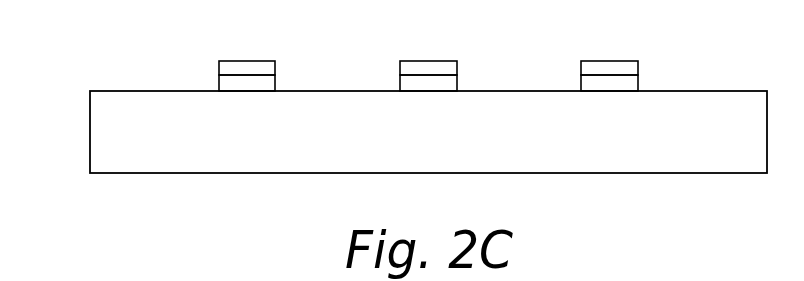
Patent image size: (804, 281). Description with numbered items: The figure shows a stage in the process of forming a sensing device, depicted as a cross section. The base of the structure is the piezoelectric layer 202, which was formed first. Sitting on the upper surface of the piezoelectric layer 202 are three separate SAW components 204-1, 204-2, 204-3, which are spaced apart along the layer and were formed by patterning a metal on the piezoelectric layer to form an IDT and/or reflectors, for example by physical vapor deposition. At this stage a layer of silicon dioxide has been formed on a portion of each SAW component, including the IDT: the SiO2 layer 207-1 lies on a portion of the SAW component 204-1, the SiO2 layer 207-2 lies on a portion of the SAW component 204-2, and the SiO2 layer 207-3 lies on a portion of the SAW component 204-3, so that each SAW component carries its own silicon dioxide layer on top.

The piezoelectric layer 202 is at (90, 131).
The SAW component 204-1 is at (581, 79).
The SAW component 204-2 is at (400, 79).
The SAW component 204-3 is at (219, 79).
The SiO2 layer 207-1 is at (581, 69).
The SiO2 layer 207-2 is at (400, 70).
The SiO2 layer 207-3 is at (219, 69).